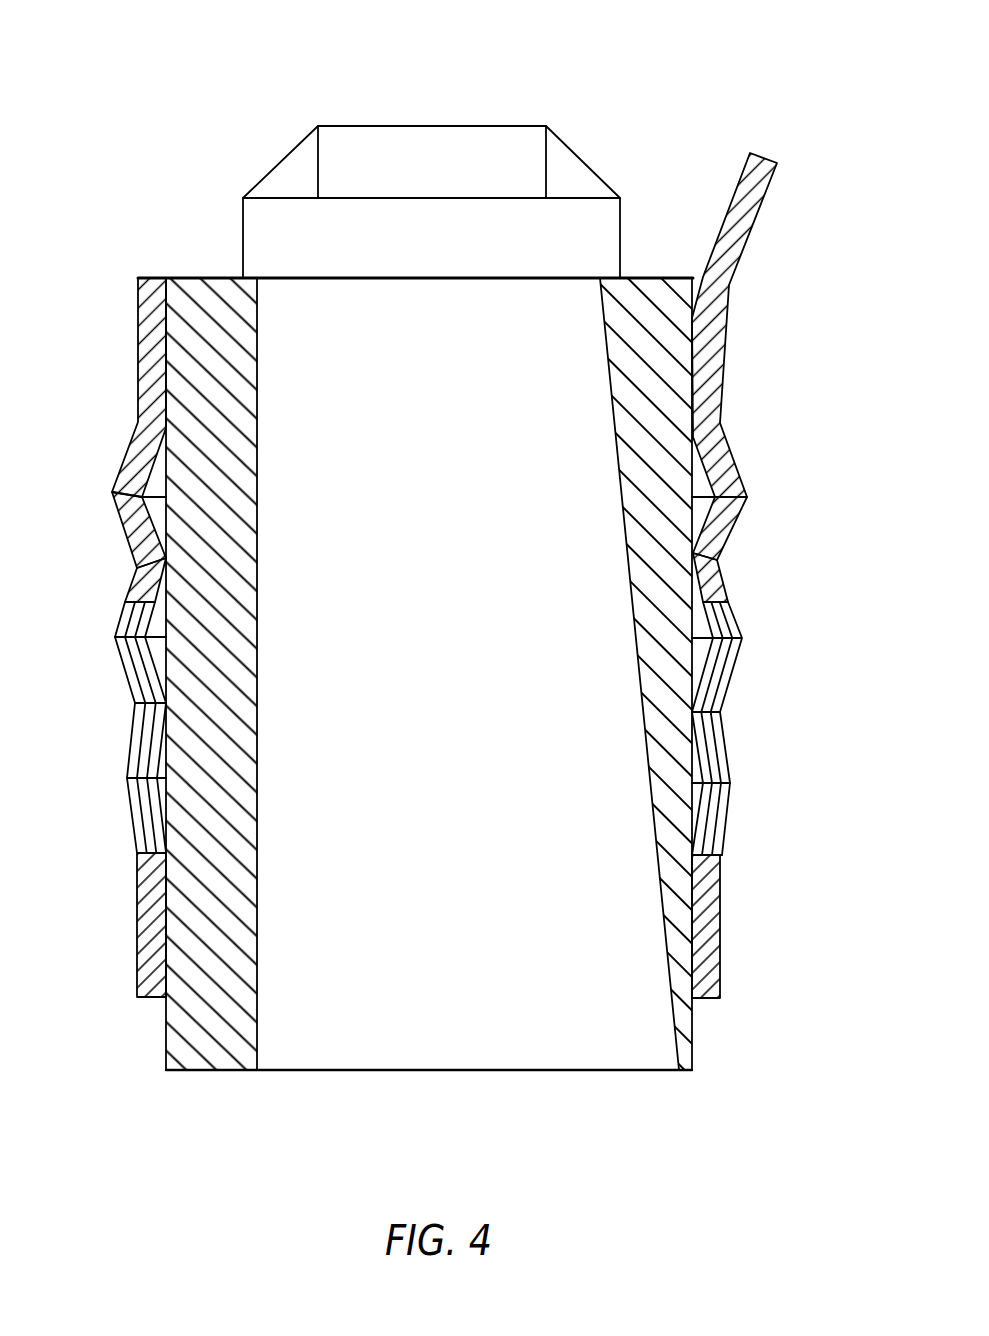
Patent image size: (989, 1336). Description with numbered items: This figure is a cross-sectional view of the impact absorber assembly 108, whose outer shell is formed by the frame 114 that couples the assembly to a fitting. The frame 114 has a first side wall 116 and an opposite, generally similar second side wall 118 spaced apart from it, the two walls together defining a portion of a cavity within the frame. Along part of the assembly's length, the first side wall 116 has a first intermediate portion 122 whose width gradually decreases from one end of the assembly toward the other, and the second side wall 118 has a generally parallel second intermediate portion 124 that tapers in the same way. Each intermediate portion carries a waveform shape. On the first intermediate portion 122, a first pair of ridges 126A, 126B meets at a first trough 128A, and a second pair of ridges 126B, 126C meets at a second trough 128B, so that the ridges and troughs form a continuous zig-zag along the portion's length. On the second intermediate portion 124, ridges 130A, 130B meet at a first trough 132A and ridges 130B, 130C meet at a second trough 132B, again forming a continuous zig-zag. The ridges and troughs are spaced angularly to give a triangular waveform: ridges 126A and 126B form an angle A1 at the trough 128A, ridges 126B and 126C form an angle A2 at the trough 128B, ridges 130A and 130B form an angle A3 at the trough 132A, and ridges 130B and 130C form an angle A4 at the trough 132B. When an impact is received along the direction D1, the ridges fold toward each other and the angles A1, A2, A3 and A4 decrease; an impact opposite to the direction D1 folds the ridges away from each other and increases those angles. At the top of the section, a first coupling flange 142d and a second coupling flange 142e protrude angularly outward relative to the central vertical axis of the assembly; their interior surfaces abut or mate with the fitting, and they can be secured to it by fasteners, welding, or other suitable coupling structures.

The impact absorber assembly 108 is at (68, 110).
The frame 114 is at (655, 153).
The second coupling flange 142e is at (293, 175).
The first coupling flange 142d is at (755, 200).
The first intermediate portion 122 is at (127, 447).
The second intermediate portion 124 is at (736, 462).
The ridge 126A is at (112, 495).
The ridge 126B is at (116, 638).
The ridge 126C is at (127, 780).
The first trough 128A is at (136, 566).
The second trough 128B is at (124, 690).
The ridge 130A is at (748, 498).
The ridge 130B is at (743, 638).
The ridge 130C is at (732, 783).
The first trough 132A is at (738, 552).
The second trough 132B is at (735, 745).
The first side wall 116 is at (133, 820).
The second side wall 118 is at (722, 795).
The angle A1 is at (118, 528).
The angle A2 is at (118, 663).
The angle A3 is at (738, 530).
The angle A4 is at (740, 667).
The direction D1 is at (852, 880).